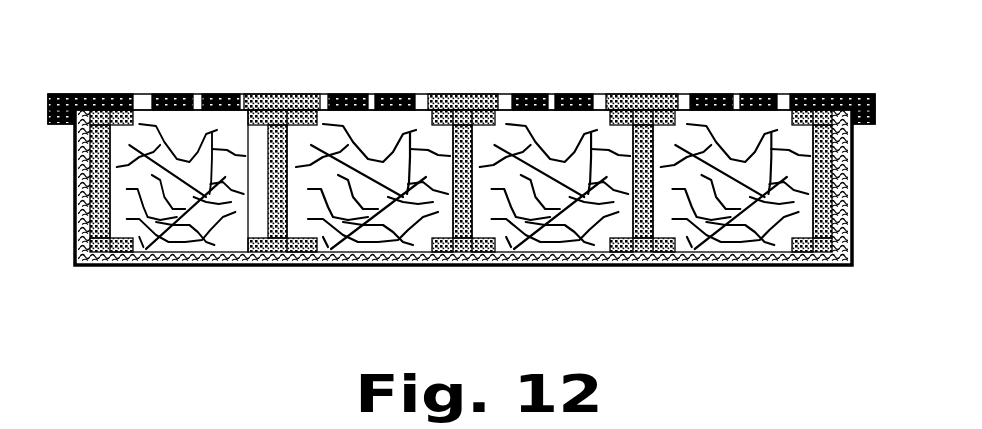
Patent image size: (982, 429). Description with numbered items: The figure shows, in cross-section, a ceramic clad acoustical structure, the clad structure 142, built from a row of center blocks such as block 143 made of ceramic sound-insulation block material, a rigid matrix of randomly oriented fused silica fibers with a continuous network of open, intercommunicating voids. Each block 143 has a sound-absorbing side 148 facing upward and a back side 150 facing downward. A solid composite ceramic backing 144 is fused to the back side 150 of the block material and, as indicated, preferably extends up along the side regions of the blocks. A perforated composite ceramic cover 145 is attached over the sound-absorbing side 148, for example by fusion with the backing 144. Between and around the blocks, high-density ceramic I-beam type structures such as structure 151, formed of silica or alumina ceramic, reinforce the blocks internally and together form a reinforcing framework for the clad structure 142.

The clad structure 142 is at (461, 182).
The center block 143 is at (350, 142).
The solid composite ceramic backing 144 is at (158, 267).
The perforated composite ceramic cover 145 is at (178, 97).
The sound-absorbing side 148 is at (503, 100).
The back side 150 is at (333, 263).
The I-beam type structure 151 is at (648, 218).